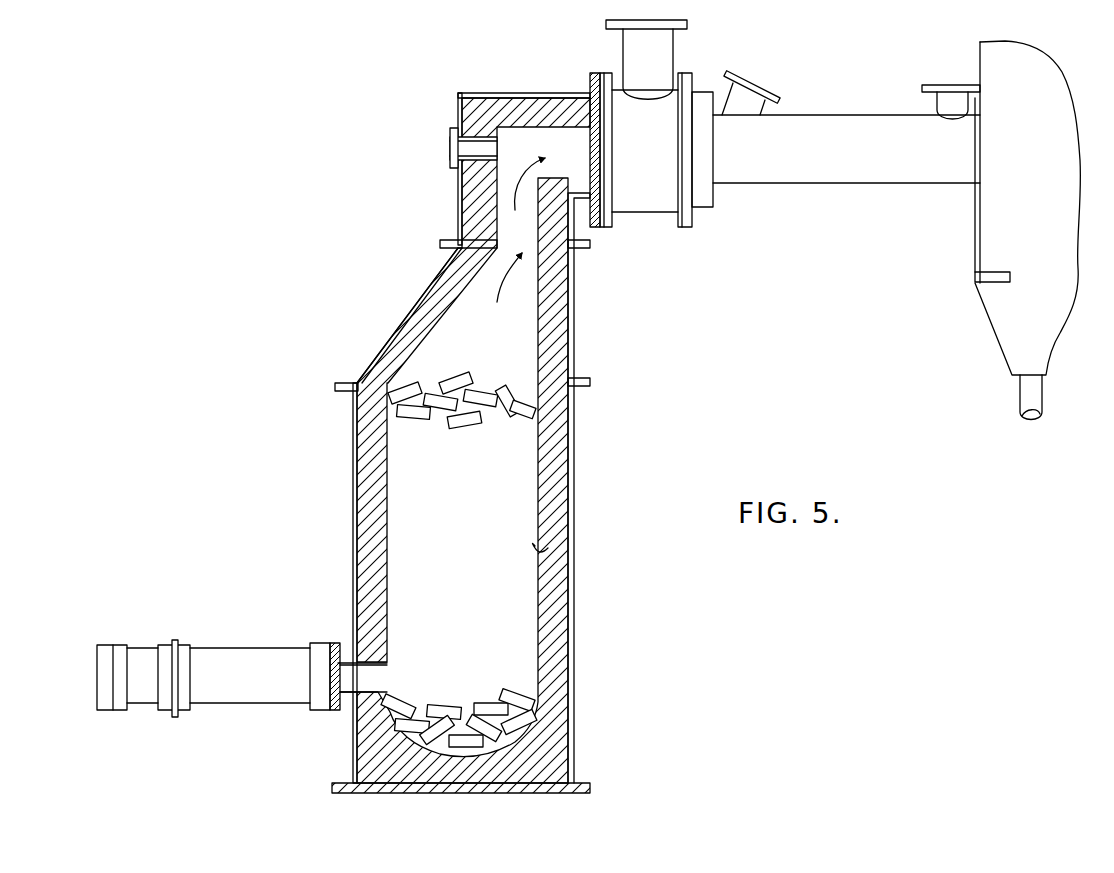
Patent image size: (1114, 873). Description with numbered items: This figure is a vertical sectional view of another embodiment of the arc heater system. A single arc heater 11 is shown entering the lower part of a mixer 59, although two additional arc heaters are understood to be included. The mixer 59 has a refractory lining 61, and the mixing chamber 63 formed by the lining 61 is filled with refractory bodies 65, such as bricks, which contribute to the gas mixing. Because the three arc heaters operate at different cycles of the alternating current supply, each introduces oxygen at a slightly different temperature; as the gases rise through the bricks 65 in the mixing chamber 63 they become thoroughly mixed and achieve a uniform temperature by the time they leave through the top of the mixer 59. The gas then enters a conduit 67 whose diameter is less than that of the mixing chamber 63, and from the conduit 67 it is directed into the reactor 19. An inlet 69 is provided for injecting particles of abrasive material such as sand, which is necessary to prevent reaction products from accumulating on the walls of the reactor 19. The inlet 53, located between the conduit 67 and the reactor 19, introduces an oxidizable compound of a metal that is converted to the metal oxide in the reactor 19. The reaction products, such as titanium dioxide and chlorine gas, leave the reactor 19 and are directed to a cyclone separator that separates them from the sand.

The arc heater 11 is at (262, 695).
The reactor 19 is at (895, 178).
The inlet 53 is at (663, 48).
The mixer 59 is at (575, 520).
The refractory lining 61 is at (560, 607).
The mixing chamber 63 is at (548, 548).
The refractory bodies 65 is at (540, 405).
The conduit 67 is at (533, 135).
The inlet 69 is at (452, 148).